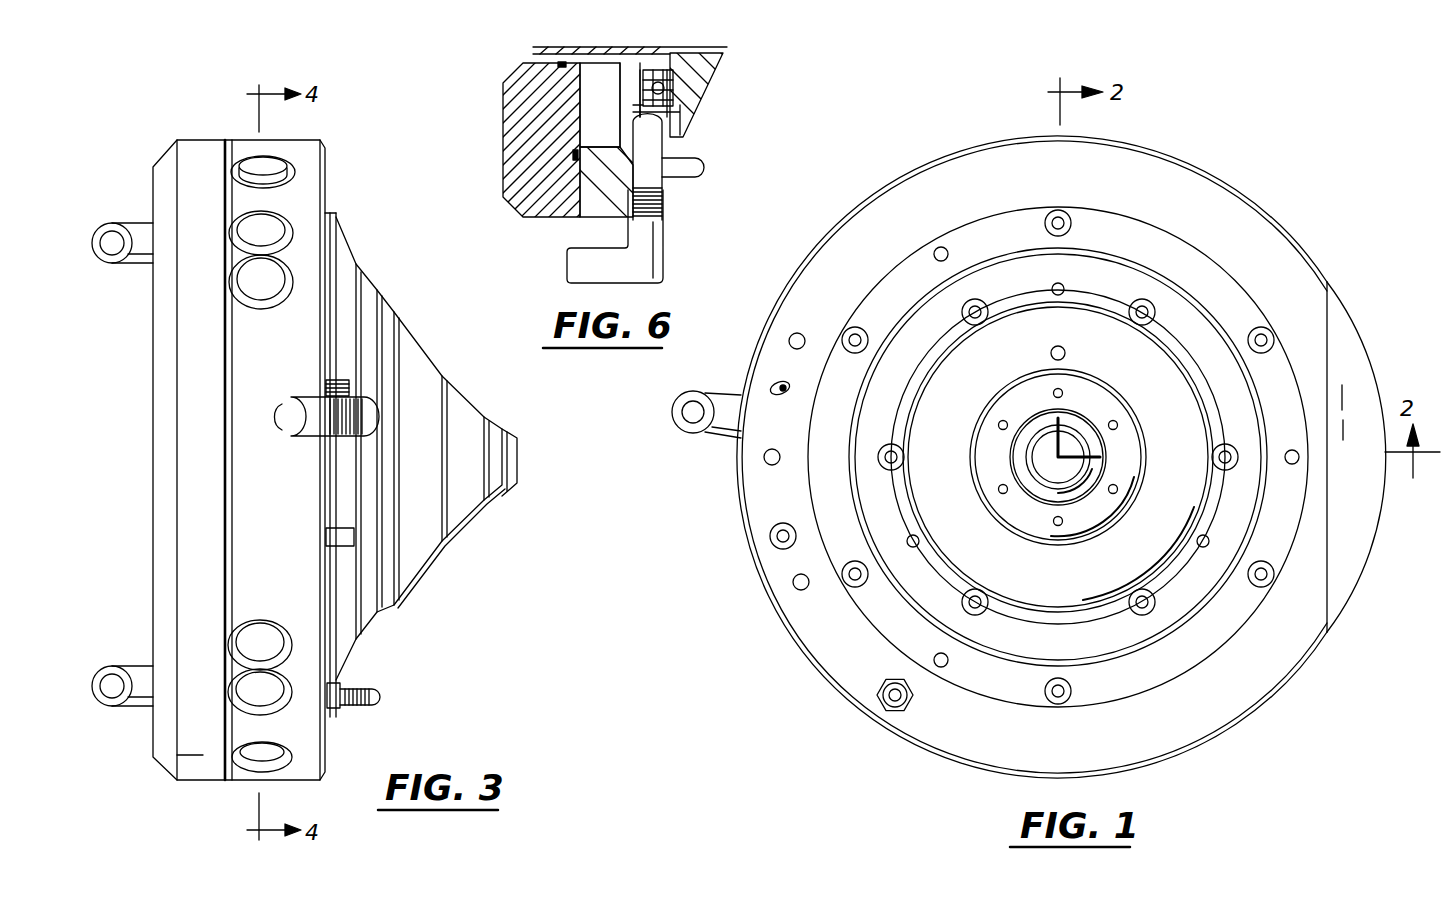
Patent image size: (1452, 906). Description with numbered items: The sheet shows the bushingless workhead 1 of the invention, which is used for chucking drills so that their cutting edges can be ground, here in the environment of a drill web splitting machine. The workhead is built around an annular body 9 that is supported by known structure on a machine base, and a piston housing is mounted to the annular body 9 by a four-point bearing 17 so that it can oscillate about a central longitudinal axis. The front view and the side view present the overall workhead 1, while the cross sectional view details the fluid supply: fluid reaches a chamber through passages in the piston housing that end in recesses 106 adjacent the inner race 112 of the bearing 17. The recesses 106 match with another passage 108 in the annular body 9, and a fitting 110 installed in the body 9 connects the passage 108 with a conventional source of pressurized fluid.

In FIG. 3, the bushingless workhead 1 is at (433, 344).
In FIG. 1, the bushingless workhead 1 is at (1242, 162).
In FIG. 6, the annular body 9 is at (600, 207).
In FIG. 6, the four-point bearing 17 is at (684, 104).
In FIG. 6, the recesses 106 is at (657, 70).
In FIG. 6, the passage 108 is at (652, 176).
In FIG. 3, the fitting 110 is at (376, 410).
In FIG. 6, the fitting 110 is at (655, 264).
In FIG. 1, the fitting 110 is at (717, 438).
In FIG. 6, the inner race 112 is at (676, 78).